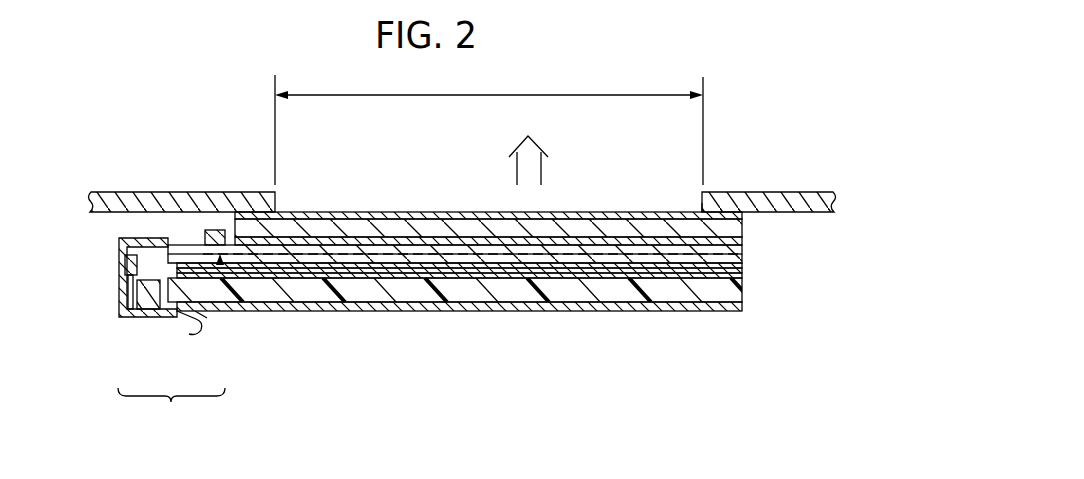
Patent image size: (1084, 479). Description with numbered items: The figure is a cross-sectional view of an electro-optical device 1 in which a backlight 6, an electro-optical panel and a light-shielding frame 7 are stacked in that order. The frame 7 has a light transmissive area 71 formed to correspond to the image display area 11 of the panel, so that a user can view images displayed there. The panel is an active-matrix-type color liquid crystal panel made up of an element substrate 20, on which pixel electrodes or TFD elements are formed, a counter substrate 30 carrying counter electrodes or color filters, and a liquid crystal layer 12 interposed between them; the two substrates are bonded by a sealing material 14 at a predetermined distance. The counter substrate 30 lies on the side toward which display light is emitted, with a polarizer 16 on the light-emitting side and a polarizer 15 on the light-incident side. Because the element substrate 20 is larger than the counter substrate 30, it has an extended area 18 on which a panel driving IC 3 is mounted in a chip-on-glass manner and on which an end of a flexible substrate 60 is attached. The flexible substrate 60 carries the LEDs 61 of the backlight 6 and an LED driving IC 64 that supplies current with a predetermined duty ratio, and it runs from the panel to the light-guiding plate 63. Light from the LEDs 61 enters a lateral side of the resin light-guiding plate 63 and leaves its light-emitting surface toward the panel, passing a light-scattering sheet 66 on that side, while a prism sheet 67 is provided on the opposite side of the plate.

The electro-optical device 1 is at (183, 98).
The panel driving IC 3 is at (205, 237).
The backlight 6 is at (171, 411).
The light-shielding frame 7 is at (128, 192).
The image display area 11 is at (547, 94).
The liquid crystal layer 12 is at (603, 250).
The sealing material 14 is at (273, 238).
The polarizer 15 is at (517, 292).
The polarizer 16 is at (393, 212).
The extended area 18 is at (226, 266).
The element substrate 20 is at (690, 256).
The counter substrate 30 is at (658, 222).
The flexible substrate 60 is at (120, 291).
The LED 61 is at (148, 305).
The light-guiding plate 63 is at (220, 300).
The LED driving IC 64 is at (133, 310).
The light-scattering sheet 66 is at (418, 273).
The prism sheet 67 is at (442, 310).
The light transmissive area 71 is at (700, 203).